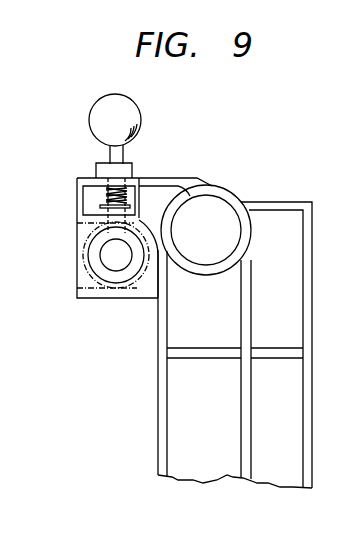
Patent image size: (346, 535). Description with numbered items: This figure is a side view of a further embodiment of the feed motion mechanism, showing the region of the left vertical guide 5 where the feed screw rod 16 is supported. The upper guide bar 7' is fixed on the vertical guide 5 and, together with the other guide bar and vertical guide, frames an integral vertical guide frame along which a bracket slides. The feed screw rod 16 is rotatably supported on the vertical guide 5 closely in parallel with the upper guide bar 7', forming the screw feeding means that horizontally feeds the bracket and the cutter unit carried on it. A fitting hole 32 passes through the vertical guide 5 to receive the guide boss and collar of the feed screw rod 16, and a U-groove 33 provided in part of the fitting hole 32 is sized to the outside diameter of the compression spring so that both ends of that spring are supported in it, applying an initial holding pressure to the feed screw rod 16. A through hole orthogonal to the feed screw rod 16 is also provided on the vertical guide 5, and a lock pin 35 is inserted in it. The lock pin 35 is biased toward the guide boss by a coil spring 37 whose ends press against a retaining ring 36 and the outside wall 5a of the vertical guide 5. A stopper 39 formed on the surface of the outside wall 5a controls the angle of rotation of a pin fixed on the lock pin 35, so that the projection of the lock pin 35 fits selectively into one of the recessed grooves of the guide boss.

The vertical guide 5 is at (150, 393).
The outside wall 5a is at (76, 171).
The guide bar 7' is at (206, 215).
The feed screw rod 16 is at (120, 262).
The fitting hole 32 is at (118, 281).
The U-groove 33 is at (78, 280).
The lock pin 35 is at (124, 158).
The retaining ring 36 is at (101, 208).
The coil spring 37 is at (105, 195).
The stopper 39 is at (96, 165).